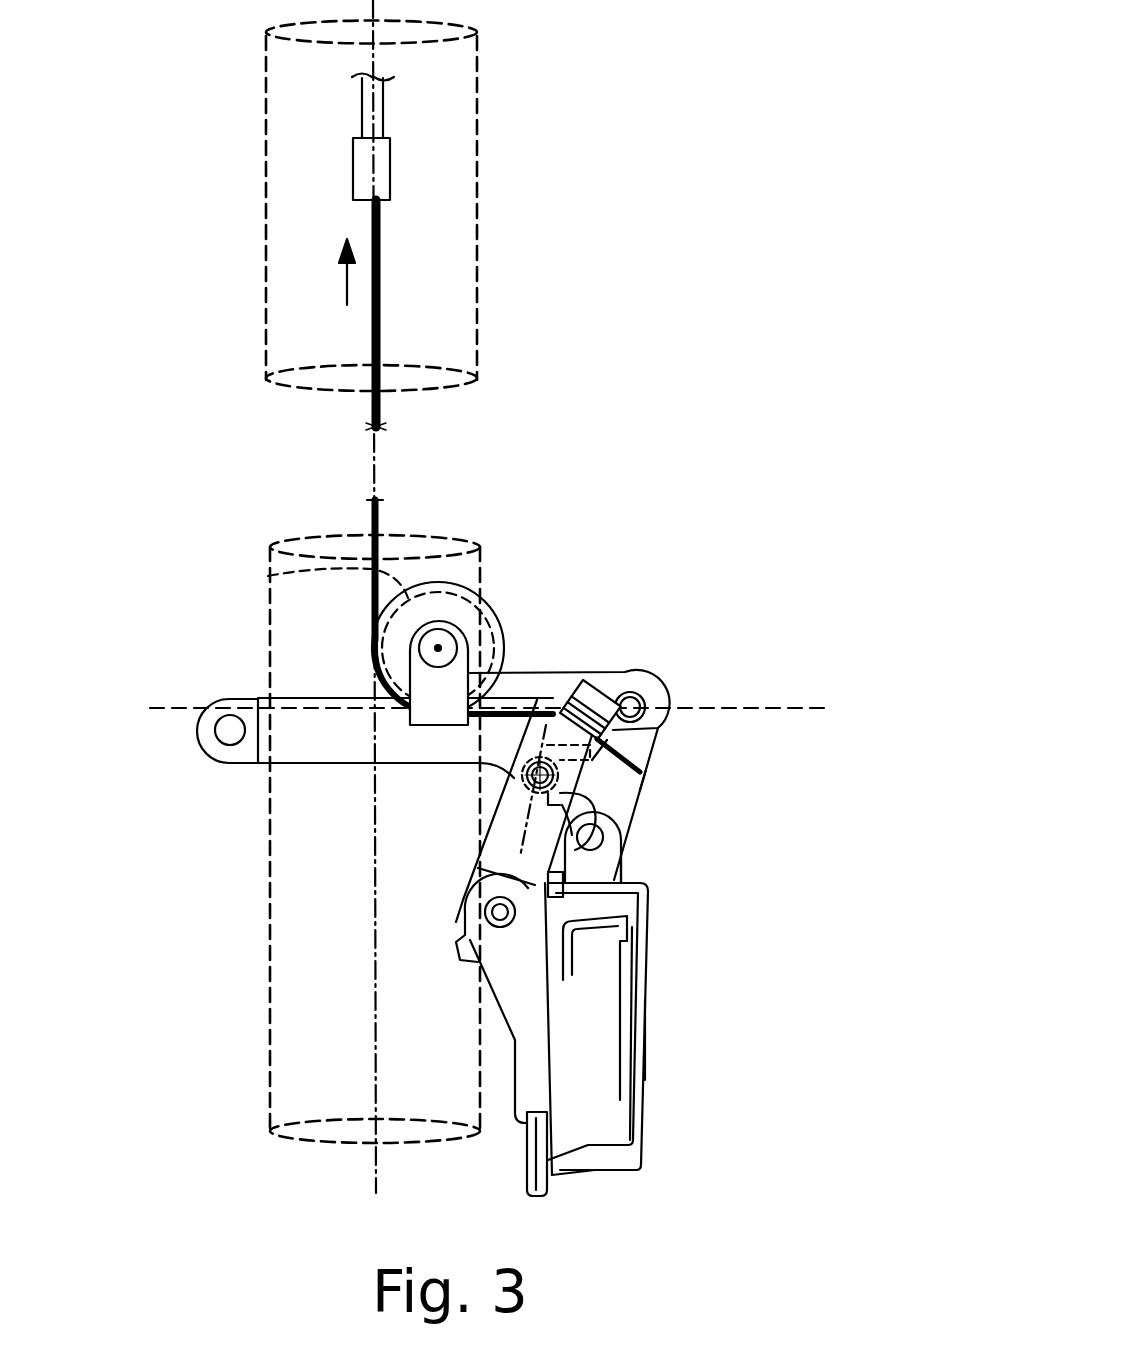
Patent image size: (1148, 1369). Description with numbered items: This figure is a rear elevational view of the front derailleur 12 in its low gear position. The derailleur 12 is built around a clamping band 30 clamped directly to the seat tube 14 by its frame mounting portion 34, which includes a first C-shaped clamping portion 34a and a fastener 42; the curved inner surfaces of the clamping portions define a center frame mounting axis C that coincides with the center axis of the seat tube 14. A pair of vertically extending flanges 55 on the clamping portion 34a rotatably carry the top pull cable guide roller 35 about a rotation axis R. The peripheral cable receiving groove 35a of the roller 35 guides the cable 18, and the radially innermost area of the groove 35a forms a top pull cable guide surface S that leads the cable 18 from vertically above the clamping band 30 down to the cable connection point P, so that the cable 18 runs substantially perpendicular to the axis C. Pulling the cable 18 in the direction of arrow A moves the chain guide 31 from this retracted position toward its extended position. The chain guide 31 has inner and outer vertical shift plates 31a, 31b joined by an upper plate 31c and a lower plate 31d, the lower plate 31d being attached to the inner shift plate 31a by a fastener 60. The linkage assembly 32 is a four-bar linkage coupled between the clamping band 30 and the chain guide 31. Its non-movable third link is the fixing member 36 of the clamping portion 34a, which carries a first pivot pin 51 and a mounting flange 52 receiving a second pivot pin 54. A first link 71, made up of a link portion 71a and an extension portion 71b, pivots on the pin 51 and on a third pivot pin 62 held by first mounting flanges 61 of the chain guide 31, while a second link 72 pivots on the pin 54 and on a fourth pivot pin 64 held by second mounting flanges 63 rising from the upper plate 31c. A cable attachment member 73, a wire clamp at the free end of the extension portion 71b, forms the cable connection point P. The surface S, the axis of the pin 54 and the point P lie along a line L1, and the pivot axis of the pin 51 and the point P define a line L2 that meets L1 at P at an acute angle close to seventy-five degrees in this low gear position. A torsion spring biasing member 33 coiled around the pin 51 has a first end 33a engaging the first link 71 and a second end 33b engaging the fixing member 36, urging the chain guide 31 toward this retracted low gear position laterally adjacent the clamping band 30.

The front derailleur 12 is at (618, 628).
The seat tube 14 is at (477, 253).
The cable 18 is at (384, 508).
The clamping band 30 is at (342, 775).
The chain guide 31 is at (665, 1015).
The inner shift plate 31a is at (560, 1092).
The outer shift plate 31b is at (645, 1089).
The upper plate 31c is at (630, 868).
The lower plate 31d is at (598, 1170).
The linkage assembly 32 is at (688, 777).
The biasing member 33 is at (507, 795).
The first end 33a is at (612, 838).
The second end 33b is at (652, 800).
The frame mounting portion 34 is at (277, 715).
The first C-shaped clamping portion 34a is at (313, 752).
The top pull cable guide roller 35 is at (508, 602).
The cable receiving groove 35a is at (268, 576).
The fixing member 36 is at (605, 667).
The fastener 42 is at (210, 743).
The first pivot pin 51 is at (525, 781).
The mounting flange 52 is at (570, 680).
The second pivot pin 54 is at (648, 700).
The vertically extending flanges 55 is at (378, 652).
The fastener 60 is at (513, 1142).
The first mounting flanges 61 is at (480, 992).
The third pivot pin 62 is at (492, 965).
The second mounting flanges 63 is at (615, 857).
The fourth pivot pin 64 is at (612, 846).
The first link 71 is at (477, 824).
The link portion 71a is at (478, 878).
The extension portion 71b is at (527, 773).
The second link 72 is at (656, 744).
The cable attachment member 73 is at (605, 672).
The arrow A is at (347, 283).
The center frame mounting axis C is at (375, 957).
The line L1 is at (830, 708).
The line L2 is at (478, 845).
The cable connection point P is at (548, 706).
The rotation axis R is at (440, 646).
The top pull cable guide surface S is at (376, 674).